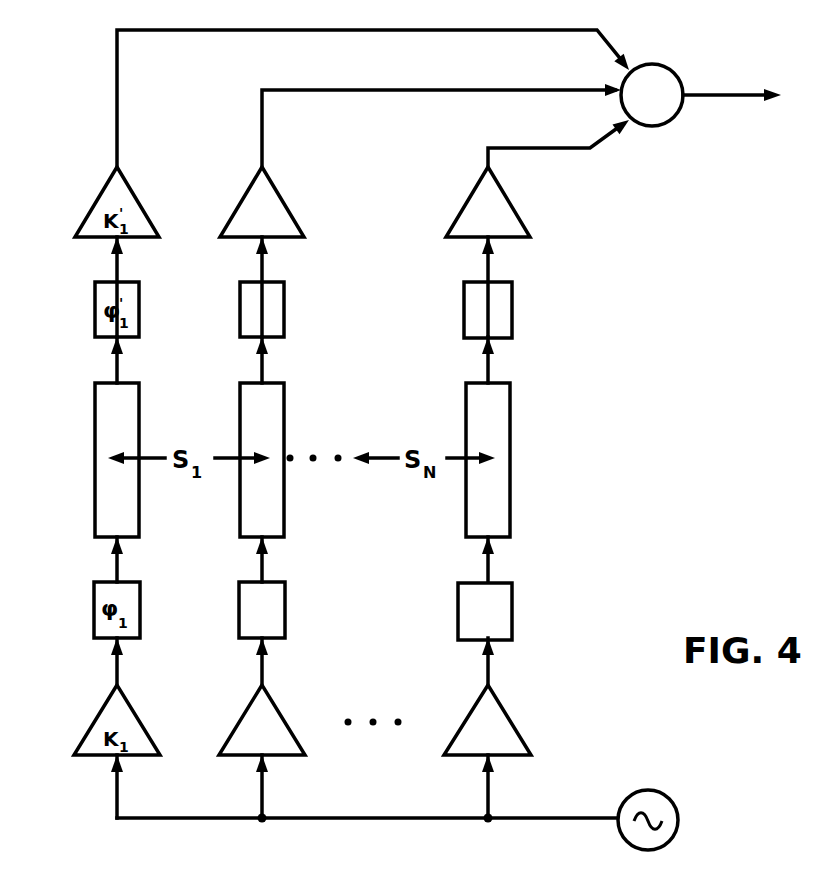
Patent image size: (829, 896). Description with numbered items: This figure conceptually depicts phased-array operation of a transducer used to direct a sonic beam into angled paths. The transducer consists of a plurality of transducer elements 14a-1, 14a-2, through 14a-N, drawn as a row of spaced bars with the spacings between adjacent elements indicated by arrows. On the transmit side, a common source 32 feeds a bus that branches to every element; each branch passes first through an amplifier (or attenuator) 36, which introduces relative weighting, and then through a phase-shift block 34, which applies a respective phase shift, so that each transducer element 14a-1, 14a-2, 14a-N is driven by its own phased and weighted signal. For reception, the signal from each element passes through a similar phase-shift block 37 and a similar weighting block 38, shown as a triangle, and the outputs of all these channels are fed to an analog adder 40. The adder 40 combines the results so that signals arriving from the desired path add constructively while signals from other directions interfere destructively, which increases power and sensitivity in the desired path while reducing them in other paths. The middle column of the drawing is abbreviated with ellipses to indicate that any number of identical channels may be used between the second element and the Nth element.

The transducer element 14a-1 is at (95, 424).
The transducer element 14a-2 is at (284, 424).
The transducer element 14a-N is at (510, 432).
The phase-shift block 34 is at (284, 600).
The amplifier 36 is at (279, 712).
The receive phase-shift block 37 is at (284, 305).
The receive weighting block 38 is at (288, 210).
The analog adder 40 is at (672, 119).
The common source 32 is at (648, 790).